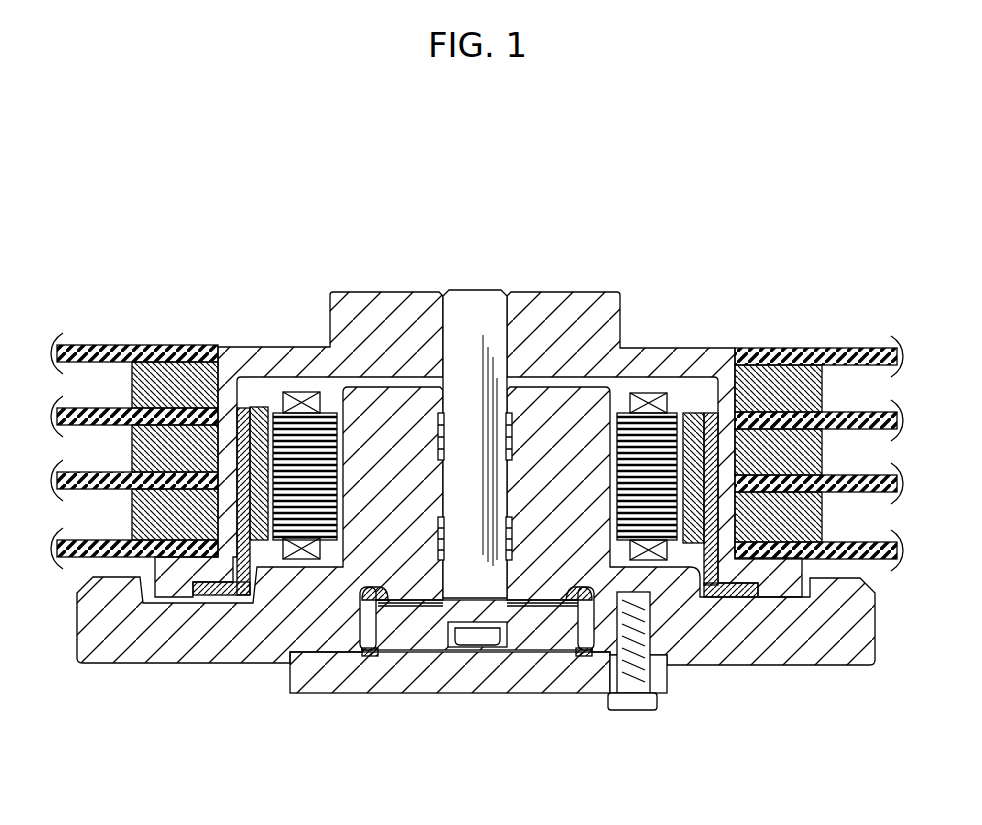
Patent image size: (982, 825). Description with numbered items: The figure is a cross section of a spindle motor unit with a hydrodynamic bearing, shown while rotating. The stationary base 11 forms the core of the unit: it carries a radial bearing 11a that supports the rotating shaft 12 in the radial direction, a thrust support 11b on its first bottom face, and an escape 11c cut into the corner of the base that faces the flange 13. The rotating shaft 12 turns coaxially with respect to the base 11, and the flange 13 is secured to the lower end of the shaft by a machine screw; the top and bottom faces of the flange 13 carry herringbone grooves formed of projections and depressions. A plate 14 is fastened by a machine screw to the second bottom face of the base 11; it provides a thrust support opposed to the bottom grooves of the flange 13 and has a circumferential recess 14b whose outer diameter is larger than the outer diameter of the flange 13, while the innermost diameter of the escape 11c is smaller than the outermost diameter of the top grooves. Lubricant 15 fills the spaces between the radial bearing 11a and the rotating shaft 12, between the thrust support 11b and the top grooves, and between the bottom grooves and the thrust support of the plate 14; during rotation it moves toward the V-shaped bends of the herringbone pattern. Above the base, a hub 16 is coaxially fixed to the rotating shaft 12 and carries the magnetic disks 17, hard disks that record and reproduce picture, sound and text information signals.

The base 11 is at (760, 650).
The radial bearing 11a is at (540, 600).
The thrust support 11b is at (550, 598).
The escape 11c is at (596, 592).
The rotating shaft 12 is at (468, 313).
The flange 13 is at (527, 633).
The plate 14 is at (442, 678).
The circumferential recess 14b is at (583, 653).
The lubricant 15 is at (583, 652).
The hub 16 is at (388, 318).
The magnetic disks 17 is at (787, 348).